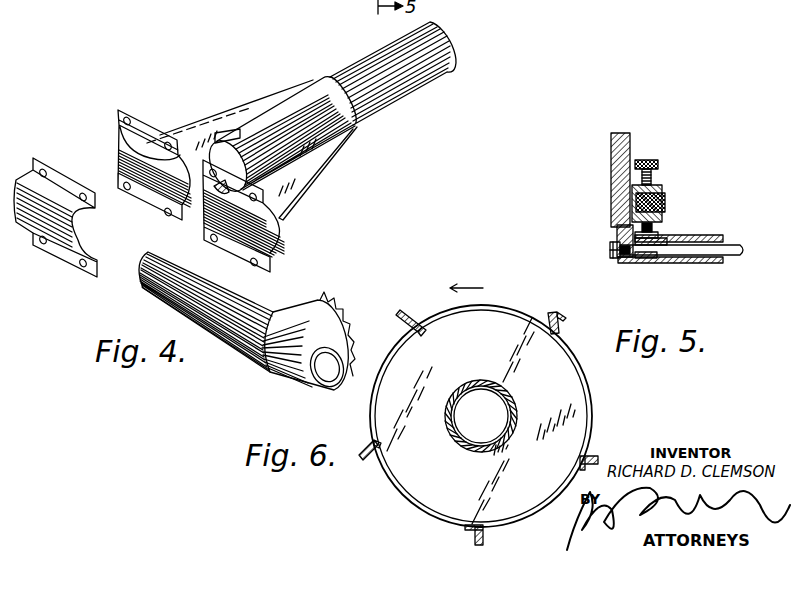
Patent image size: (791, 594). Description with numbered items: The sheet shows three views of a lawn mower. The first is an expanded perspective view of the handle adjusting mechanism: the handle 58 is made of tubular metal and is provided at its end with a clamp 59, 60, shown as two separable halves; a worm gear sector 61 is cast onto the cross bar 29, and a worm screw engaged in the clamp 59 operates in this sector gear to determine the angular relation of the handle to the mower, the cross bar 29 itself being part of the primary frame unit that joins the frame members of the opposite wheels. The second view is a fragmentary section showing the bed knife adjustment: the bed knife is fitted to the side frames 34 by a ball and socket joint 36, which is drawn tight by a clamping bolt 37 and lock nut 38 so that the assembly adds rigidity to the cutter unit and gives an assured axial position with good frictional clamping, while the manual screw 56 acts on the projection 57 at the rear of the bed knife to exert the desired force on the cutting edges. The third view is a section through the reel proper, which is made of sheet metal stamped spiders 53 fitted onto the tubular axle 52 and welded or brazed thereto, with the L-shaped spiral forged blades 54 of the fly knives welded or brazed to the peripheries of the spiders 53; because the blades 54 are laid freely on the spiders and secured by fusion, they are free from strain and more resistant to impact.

In FIG. 4, the cross bar 29 is at (235, 296).
In FIG. 5, the side frames 34 is at (628, 133).
In FIG. 5, the ball and socket joint 36 is at (640, 262).
In FIG. 5, the clamping bolt 37 is at (737, 255).
In FIG. 5, the lock nut 38 is at (613, 263).
In FIG. 6, the tubular axle 52 is at (508, 412).
In FIG. 6, the spiders 53 is at (573, 357).
In FIG. 6, the L-shaped spiral forged blades 54 is at (413, 312).
In FIG. 5, the manual screw 56 is at (658, 163).
In FIG. 5, the projection 57 is at (660, 231).
In FIG. 4, the handle 58 is at (448, 56).
In FIG. 4, the clamp 59 is at (200, 127).
In FIG. 4, the clamp 60 is at (60, 257).
In FIG. 4, the worm gear sector 61 is at (330, 312).